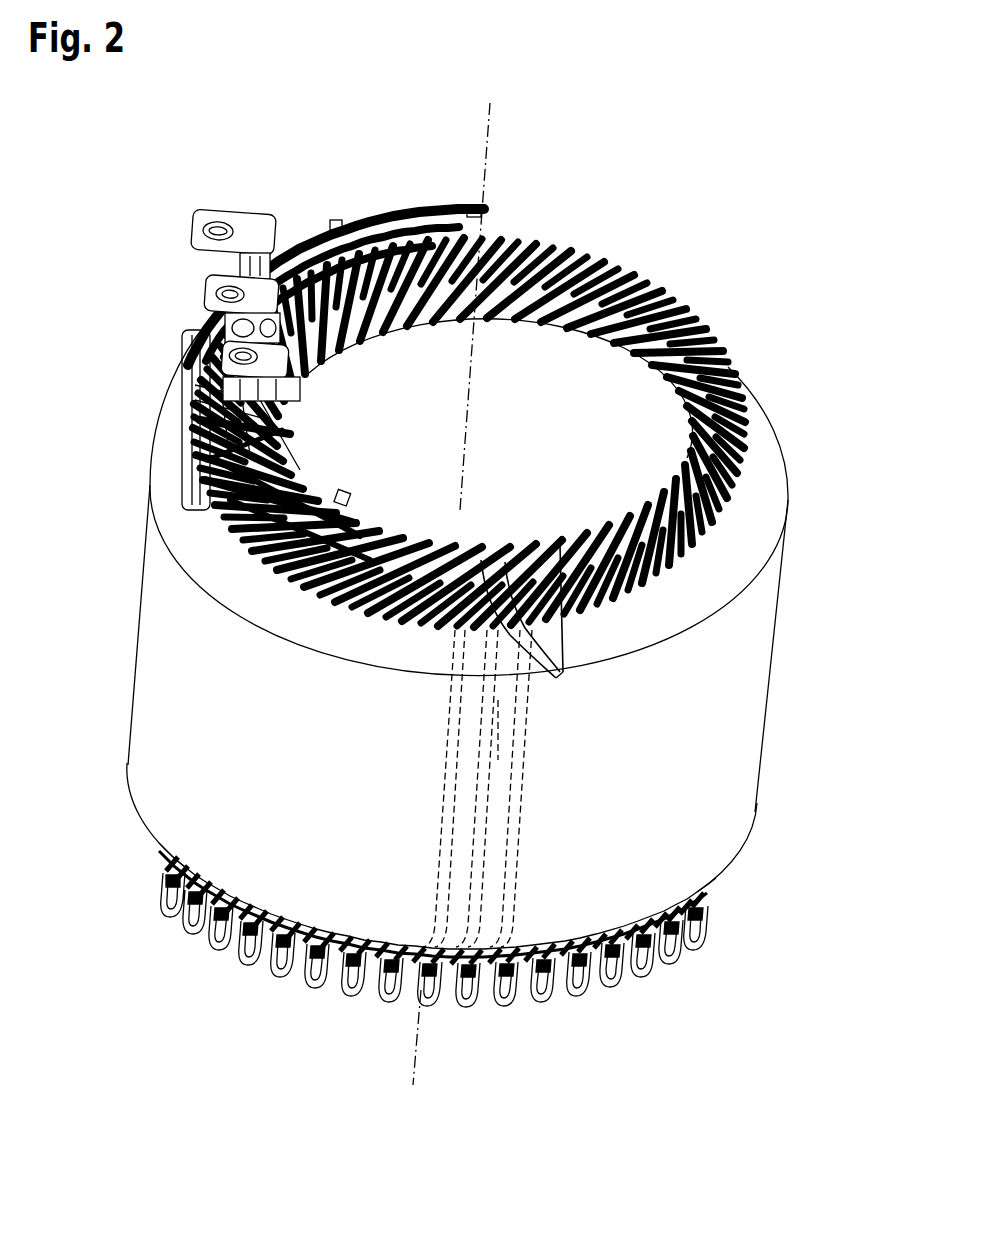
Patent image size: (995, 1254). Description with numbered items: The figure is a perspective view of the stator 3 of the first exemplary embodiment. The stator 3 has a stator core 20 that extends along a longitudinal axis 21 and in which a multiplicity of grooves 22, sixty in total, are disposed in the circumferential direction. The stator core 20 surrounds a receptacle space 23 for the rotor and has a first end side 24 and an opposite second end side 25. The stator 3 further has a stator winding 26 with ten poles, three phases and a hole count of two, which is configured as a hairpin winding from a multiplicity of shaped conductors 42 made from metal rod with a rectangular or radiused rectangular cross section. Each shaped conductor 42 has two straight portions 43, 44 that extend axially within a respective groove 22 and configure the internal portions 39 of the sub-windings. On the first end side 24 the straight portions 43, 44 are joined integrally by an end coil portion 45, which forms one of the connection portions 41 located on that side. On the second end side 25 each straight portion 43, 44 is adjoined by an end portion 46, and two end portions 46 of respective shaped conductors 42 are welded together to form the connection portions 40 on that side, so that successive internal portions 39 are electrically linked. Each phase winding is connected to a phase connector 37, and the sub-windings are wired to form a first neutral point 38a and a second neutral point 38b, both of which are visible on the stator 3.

The stator 3 is at (668, 217).
The stator core 20 is at (783, 453).
The longitudinal axis 21 is at (497, 106).
The grooves 22 is at (502, 632).
The receptacle space 23 is at (401, 446).
The first end side 24 is at (772, 388).
The second end side 25 is at (740, 875).
The stator winding 26 is at (560, 545).
The phase connector 37 is at (192, 217).
The first neutral point 38a is at (205, 481).
The second neutral point 38b is at (200, 424).
The internal portions 39 is at (470, 772).
The connection portions 40 is at (398, 987).
The connection portions 41 is at (481, 560).
The shaped conductors 42 is at (524, 734).
The straight portion 43 is at (500, 792).
The straight portion 44 is at (512, 803).
The end coil portion 45 is at (505, 562).
The end portion 46 is at (567, 973).